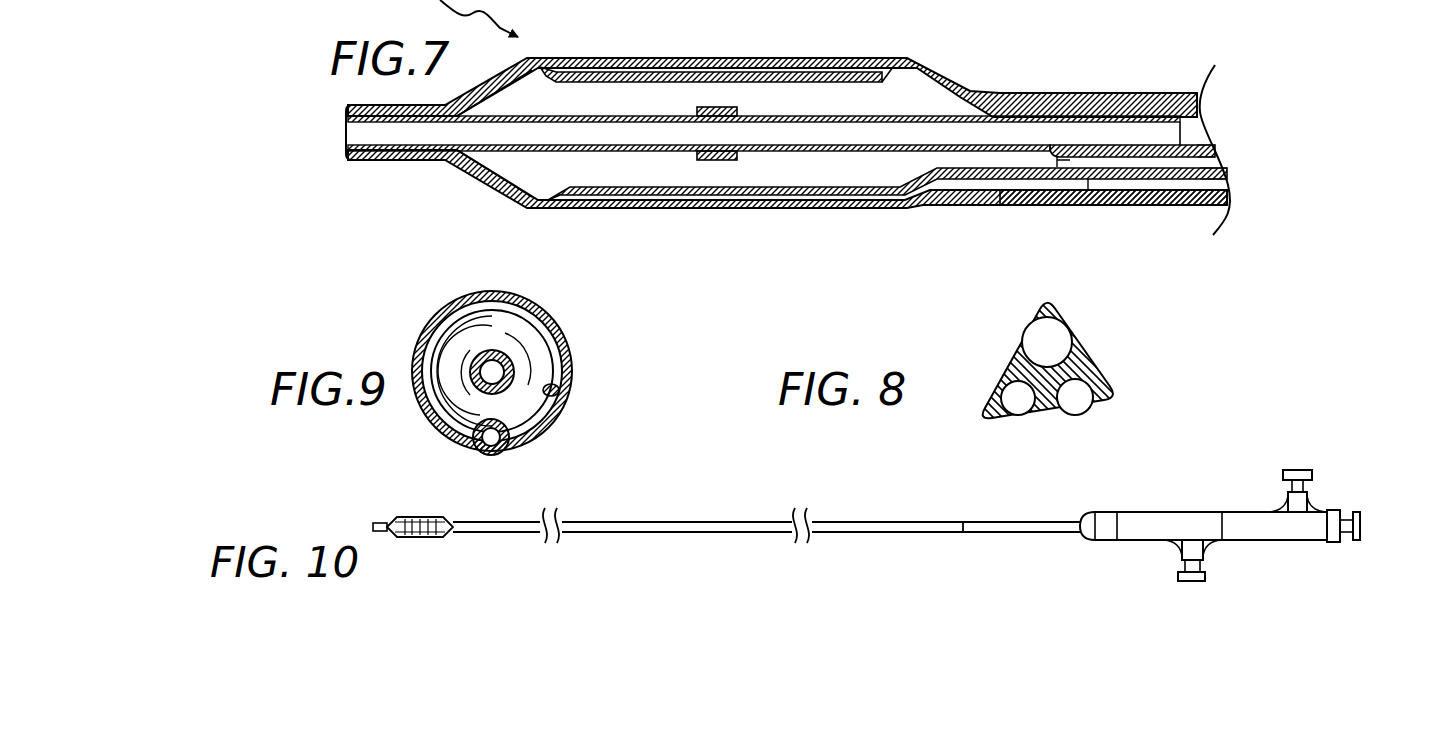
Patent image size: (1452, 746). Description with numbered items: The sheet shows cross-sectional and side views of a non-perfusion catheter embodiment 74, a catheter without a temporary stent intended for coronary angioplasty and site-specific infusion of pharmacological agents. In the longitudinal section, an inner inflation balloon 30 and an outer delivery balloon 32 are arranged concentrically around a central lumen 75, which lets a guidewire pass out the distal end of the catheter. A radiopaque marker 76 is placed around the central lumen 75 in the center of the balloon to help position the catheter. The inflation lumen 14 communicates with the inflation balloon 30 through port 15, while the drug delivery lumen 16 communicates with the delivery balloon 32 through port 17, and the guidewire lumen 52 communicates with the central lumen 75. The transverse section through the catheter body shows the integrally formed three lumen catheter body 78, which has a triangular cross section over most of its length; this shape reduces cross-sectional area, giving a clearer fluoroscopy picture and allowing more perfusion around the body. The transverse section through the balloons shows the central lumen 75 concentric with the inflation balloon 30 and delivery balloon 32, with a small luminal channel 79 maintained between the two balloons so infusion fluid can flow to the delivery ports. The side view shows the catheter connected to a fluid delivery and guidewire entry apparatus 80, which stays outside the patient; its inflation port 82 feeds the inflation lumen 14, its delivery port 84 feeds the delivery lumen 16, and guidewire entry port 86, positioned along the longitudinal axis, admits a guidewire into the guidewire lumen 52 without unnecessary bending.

In FIG. 7, the inflation lumen 14 is at (1056, 158).
In FIG. 8, the inflation lumen 14 is at (1076, 392).
In FIG. 7, the port 15 is at (1218, 146).
In FIG. 7, the drug delivery lumen 16 is at (1030, 186).
In FIG. 8, the drug delivery lumen 16 is at (1016, 394).
In FIG. 7, the port 17 is at (1230, 171).
In FIG. 7, the inner inflation balloon 30 is at (760, 58).
In FIG. 9, the inner inflation balloon 30 is at (563, 337).
In FIG. 7, the outer delivery balloon 32 is at (625, 58).
In FIG. 9, the outer delivery balloon 32 is at (565, 390).
In FIG. 7, the guidewire lumen 52 is at (1195, 136).
In FIG. 8, the guidewire lumen 52 is at (1047, 337).
In FIG. 10, the non-perfusion catheter embodiment 74 is at (362, 503).
In FIG. 7, the central lumen 75 is at (578, 135).
In FIG. 9, the central lumen 75 is at (505, 358).
In FIG. 7, the radiopaque marker 76 is at (717, 160).
In FIG. 8, the three lumen catheter body 78 is at (1100, 363).
In FIG. 7, the luminal channel 79 is at (818, 196).
In FIG. 9, the luminal channel 79 is at (490, 447).
In FIG. 10, the fluid delivery and guidewire entry apparatus 80 is at (1180, 512).
In FIG. 10, the inflation port 82 is at (1193, 581).
In FIG. 10, the delivery port 84 is at (1297, 470).
In FIG. 10, the guidewire entry port 86 is at (1360, 522).